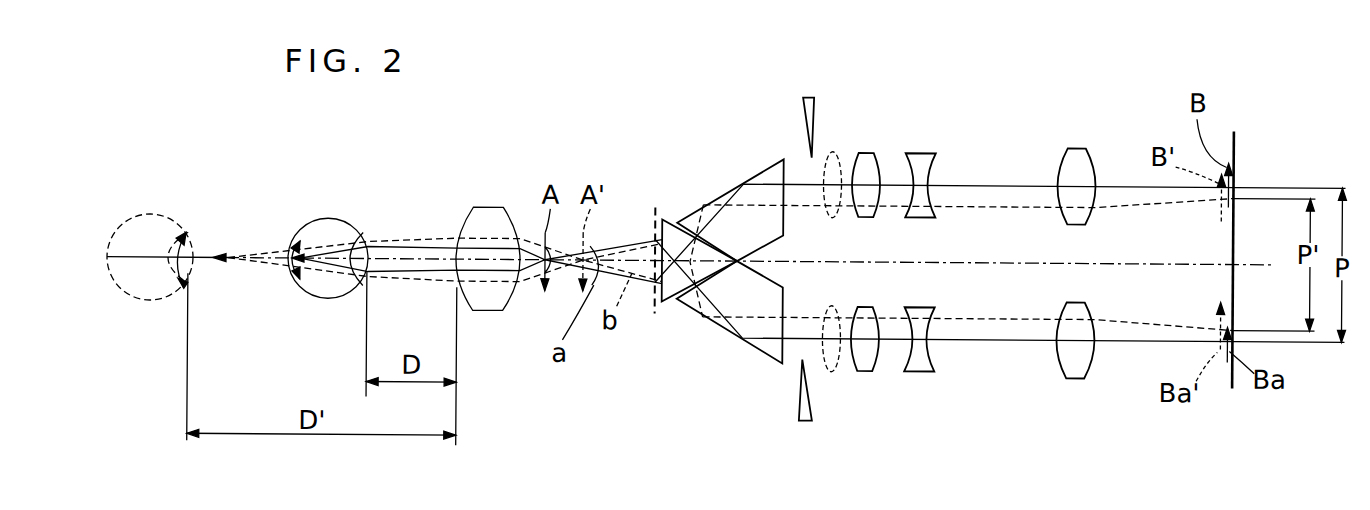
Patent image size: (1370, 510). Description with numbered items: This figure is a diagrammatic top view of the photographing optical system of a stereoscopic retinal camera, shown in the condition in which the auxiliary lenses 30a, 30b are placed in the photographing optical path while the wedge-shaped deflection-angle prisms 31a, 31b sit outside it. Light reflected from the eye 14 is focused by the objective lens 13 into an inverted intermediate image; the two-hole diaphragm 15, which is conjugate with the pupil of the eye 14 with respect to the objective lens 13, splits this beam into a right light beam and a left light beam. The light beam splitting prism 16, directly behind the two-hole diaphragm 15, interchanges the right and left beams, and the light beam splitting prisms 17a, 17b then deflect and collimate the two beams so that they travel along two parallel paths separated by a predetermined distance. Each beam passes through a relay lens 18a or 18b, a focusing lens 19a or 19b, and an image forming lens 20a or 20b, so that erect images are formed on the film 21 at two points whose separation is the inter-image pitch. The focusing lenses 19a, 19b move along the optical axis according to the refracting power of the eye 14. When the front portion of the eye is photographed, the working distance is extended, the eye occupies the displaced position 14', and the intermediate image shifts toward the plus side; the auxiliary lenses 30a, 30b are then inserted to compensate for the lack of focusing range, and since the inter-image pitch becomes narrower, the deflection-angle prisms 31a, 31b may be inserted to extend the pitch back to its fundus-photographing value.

The objective lens 13 is at (487, 208).
The eye 14 is at (328, 217).
The eye at displaced position 14' is at (150, 219).
The two-hole diaphragm 15 is at (655, 216).
The light beam splitting prism 16 is at (660, 300).
The light beam splitting prism 17a is at (713, 197).
The light beam splitting prism 17b is at (697, 307).
The relay lens 18a is at (866, 212).
The relay lens 18b is at (863, 366).
The focusing lens 19a is at (928, 146).
The focusing lens 19b is at (932, 352).
The image forming lens 20a is at (1080, 141).
The image forming lens 20b is at (1080, 372).
The film 21 is at (1235, 127).
The auxiliary lens 30a is at (832, 147).
The auxiliary lens 30b is at (834, 367).
The wedge-shaped deflection-angle prism 31a is at (803, 113).
The wedge-shaped deflection-angle prism 31b is at (800, 411).